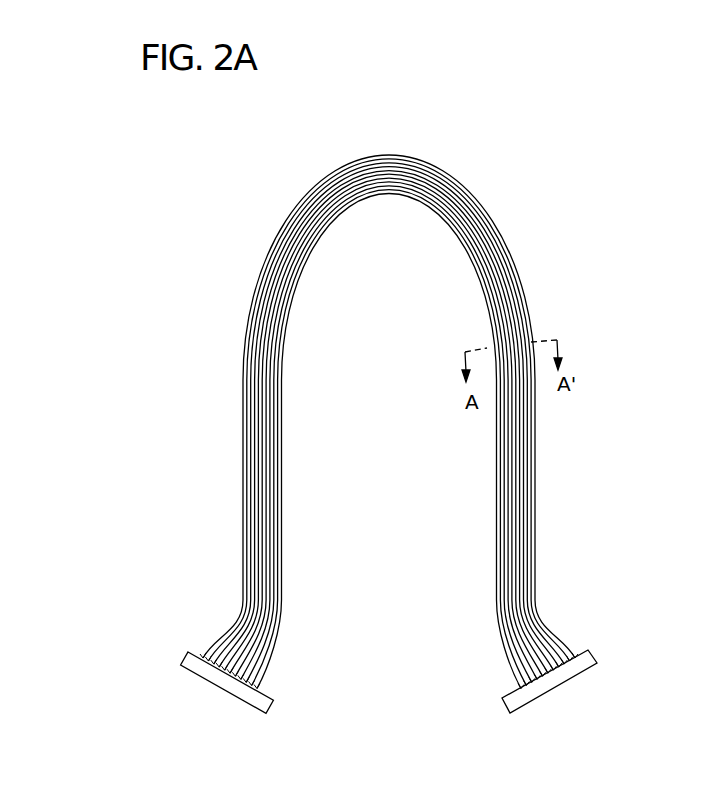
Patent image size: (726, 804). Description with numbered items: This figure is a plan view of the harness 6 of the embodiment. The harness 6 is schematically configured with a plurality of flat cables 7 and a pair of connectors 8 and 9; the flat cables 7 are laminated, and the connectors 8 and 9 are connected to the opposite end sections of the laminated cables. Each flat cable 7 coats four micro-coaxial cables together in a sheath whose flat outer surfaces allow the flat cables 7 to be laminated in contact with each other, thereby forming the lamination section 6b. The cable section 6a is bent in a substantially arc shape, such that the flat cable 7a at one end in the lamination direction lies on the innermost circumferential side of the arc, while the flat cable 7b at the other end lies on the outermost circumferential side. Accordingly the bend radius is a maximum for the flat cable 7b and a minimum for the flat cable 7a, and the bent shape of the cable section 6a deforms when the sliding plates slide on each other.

The harness 6 is at (331, 147).
The cable section 6a is at (244, 485).
The lamination section 6b is at (443, 171).
The flat cables 7 is at (482, 257).
The flat cable on one end in the lamination direction 7a is at (480, 305).
The flat cable on the other end in the lamination direction 7b is at (517, 288).
The connector 8 is at (270, 698).
The connector 9 is at (555, 677).